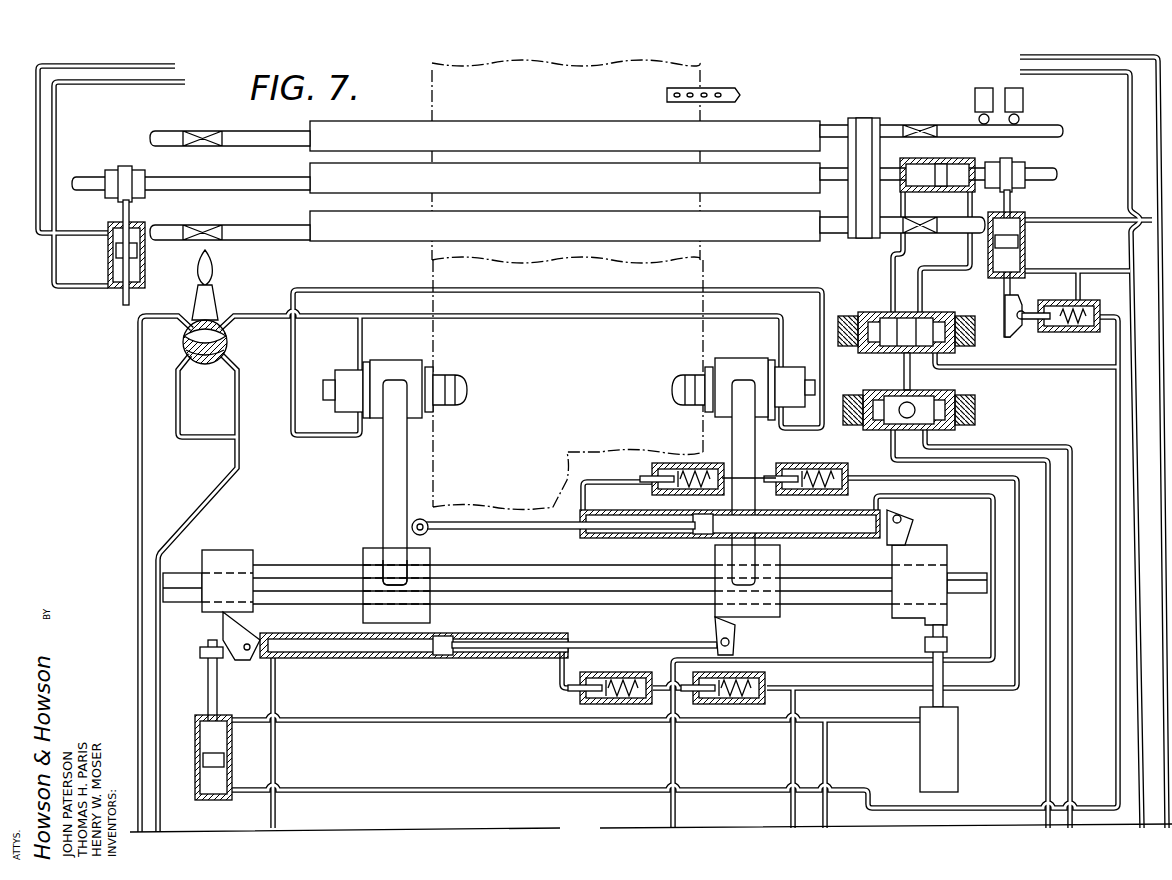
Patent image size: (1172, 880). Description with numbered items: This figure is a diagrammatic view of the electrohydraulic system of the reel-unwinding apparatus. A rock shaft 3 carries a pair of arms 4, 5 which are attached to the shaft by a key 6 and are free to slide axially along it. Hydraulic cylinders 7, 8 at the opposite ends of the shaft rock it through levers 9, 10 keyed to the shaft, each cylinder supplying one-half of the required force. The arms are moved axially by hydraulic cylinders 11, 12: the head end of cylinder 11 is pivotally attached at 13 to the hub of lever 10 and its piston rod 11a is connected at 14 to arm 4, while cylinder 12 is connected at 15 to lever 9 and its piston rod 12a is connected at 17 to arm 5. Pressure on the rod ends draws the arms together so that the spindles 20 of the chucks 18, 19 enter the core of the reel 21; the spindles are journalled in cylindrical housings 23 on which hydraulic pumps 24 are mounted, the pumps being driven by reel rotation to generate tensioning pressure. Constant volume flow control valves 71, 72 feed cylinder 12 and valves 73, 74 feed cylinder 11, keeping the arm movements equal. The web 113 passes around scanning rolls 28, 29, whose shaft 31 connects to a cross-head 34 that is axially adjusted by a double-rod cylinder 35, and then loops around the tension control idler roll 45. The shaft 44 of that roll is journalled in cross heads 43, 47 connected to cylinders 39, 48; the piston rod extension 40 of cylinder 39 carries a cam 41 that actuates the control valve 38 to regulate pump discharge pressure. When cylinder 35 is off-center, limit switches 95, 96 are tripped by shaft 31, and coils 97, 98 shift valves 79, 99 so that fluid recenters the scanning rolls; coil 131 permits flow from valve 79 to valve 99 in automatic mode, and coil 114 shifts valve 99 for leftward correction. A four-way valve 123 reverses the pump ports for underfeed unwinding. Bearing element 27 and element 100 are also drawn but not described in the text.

The rock shaft 3 is at (580, 604).
The arm 4 is at (383, 487).
The arm 5 is at (755, 452).
The key 6 is at (500, 604).
The hydraulic cylinder 7 is at (232, 760).
The hydraulic cylinder 8 is at (958, 752).
The lever 9 is at (238, 552).
The lever 10 is at (947, 552).
The hydraulic cylinder 11 is at (795, 538).
The piston rod 11a is at (532, 530).
The hydraulic cylinder 12 is at (400, 658).
The piston rod 12a is at (638, 645).
The pivotal attachment 13 is at (913, 520).
The connection 14 is at (426, 532).
The connection 15 is at (247, 660).
The connection 17 is at (737, 642).
The chuck 18 is at (432, 367).
The chuck 19 is at (708, 367).
The spindle 20 is at (460, 380).
The reel 21 is at (433, 480).
The cylindrical housing 23 is at (400, 360).
The hydraulic pump 24 is at (340, 372).
The bearing 27 is at (253, 568).
The scanning roll 28 is at (795, 241).
The scanning roll 29 is at (782, 121).
The shaft 31 is at (1063, 131).
The cross-head 34 is at (862, 118).
The hydraulic cylinder 35 is at (948, 158).
The control valve 38 is at (1070, 332).
The hydraulic cylinder 39 is at (1025, 248).
The piston rod extension 40 is at (1010, 300).
The cam 41 is at (1005, 312).
The cross head 43 is at (1020, 162).
The shaft 44 is at (1057, 174).
The tension control idler roll 45 is at (795, 188).
The cross head 47 is at (118, 168).
The cylinder 48 is at (108, 256).
The constant volume flow control valve 71 is at (767, 680).
The constant volume flow control valve 72 is at (580, 696).
The constant volume flow control valve 73 is at (832, 463).
The constant volume flow control valve 74 is at (652, 475).
The valve 79 is at (960, 428).
The limit switch 95 is at (1023, 97).
The limit switch 96 is at (975, 95).
The coil 97 is at (975, 408).
The coil 98 is at (848, 316).
The valve 99 is at (926, 308).
The bar 100 is at (745, 82).
The unwinding web 113 is at (432, 108).
The coil 114 is at (968, 346).
The four-way valve 123 is at (228, 352).
The coil 131 is at (852, 395).